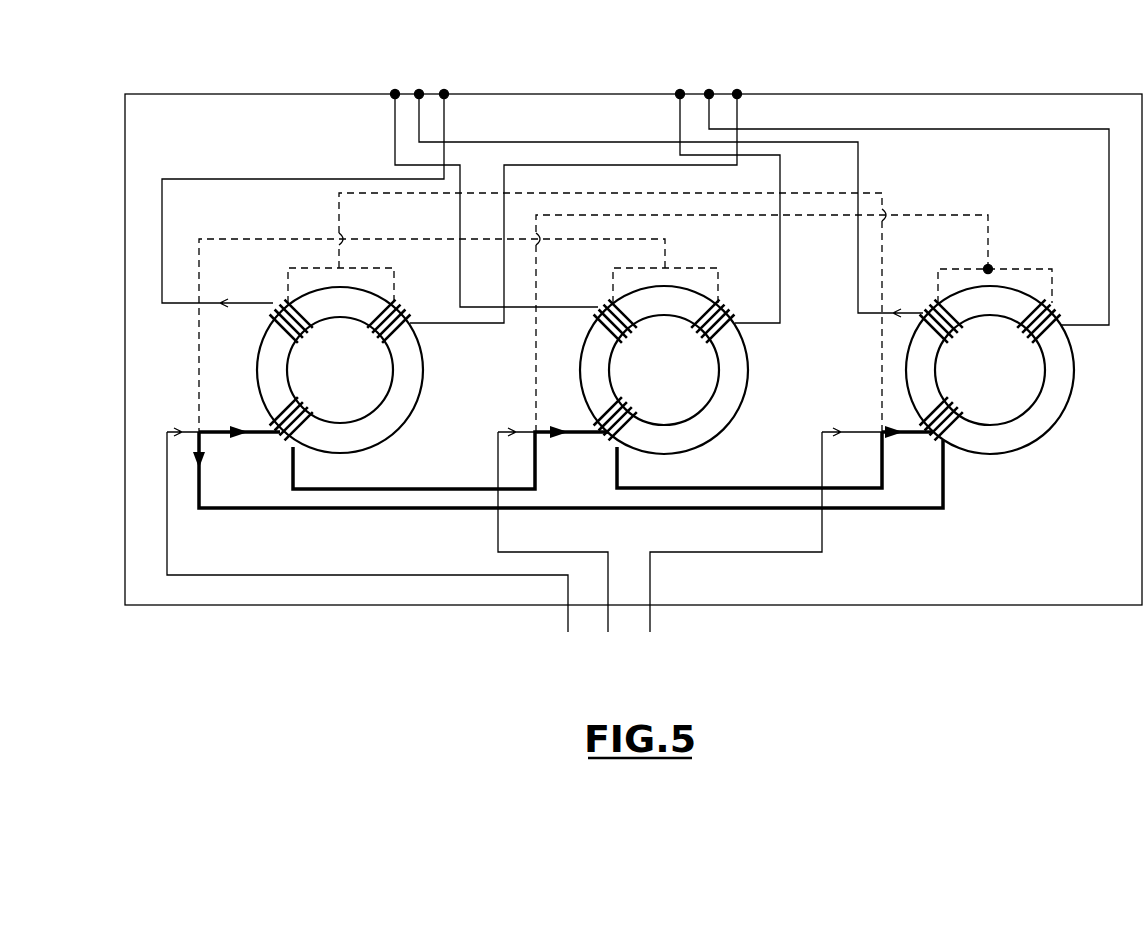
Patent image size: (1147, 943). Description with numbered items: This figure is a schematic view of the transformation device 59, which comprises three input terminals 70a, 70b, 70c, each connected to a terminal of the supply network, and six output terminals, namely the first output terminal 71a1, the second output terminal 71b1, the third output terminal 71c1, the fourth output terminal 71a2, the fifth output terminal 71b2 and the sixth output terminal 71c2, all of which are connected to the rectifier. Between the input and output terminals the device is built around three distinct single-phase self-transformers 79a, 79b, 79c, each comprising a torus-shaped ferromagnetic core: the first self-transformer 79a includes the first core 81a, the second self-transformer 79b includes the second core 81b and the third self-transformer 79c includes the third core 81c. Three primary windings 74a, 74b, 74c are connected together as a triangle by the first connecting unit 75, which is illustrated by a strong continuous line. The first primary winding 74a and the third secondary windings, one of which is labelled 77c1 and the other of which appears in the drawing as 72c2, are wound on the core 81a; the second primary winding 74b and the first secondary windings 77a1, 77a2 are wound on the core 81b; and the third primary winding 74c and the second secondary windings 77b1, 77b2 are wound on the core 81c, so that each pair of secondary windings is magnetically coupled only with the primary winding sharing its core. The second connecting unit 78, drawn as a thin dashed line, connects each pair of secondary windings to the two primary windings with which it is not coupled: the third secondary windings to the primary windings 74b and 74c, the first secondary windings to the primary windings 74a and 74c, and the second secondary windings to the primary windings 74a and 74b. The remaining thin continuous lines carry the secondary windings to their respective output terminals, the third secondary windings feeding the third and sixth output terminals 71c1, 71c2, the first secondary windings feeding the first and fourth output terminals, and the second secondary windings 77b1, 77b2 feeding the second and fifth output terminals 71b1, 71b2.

The transformation device 59 is at (152, 93).
The first output terminal 71a1 is at (395, 94).
The second output terminal 71b1 is at (419, 94).
The third output terminal 71c1 is at (444, 94).
The fourth output terminal 71a2 is at (680, 94).
The fifth output terminal 71b2 is at (709, 94).
The sixth output terminal 71c2 is at (737, 94).
The coil 72c2 is at (408, 303).
The first secondary winding 77a1 is at (598, 315).
The first secondary winding 77a2 is at (735, 305).
The second secondary winding 77b1 is at (935, 312).
The second secondary winding 77b2 is at (1055, 322).
The third secondary winding 77c1 is at (280, 338).
The second connecting unit 78 is at (937, 215).
The first self-transformer 79a is at (350, 407).
The second self-transformer 79b is at (653, 408).
The third self-transformer 79c is at (995, 410).
The first core 81a is at (383, 440).
The second core 81b is at (720, 433).
The third core 81c is at (1027, 443).
The first primary winding 74a is at (278, 448).
The second primary winding 74b is at (608, 437).
The third primary winding 74c is at (933, 440).
The first connecting unit 75 is at (652, 485).
The input terminal 70a is at (562, 597).
The input terminal 70b is at (605, 592).
The input terminal 70c is at (652, 592).